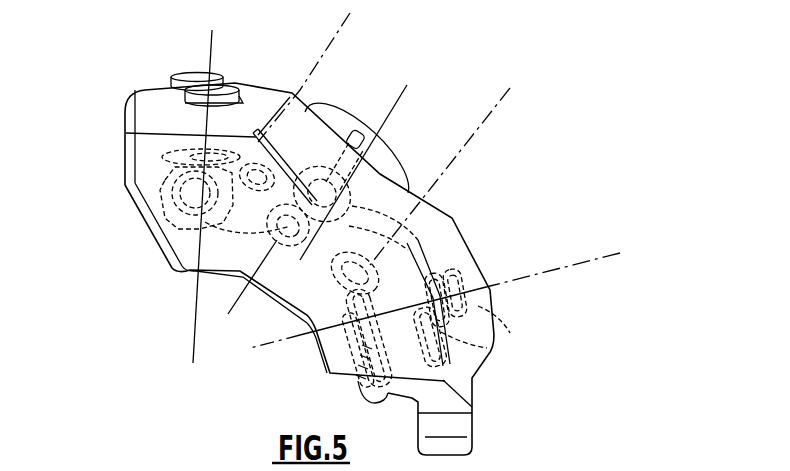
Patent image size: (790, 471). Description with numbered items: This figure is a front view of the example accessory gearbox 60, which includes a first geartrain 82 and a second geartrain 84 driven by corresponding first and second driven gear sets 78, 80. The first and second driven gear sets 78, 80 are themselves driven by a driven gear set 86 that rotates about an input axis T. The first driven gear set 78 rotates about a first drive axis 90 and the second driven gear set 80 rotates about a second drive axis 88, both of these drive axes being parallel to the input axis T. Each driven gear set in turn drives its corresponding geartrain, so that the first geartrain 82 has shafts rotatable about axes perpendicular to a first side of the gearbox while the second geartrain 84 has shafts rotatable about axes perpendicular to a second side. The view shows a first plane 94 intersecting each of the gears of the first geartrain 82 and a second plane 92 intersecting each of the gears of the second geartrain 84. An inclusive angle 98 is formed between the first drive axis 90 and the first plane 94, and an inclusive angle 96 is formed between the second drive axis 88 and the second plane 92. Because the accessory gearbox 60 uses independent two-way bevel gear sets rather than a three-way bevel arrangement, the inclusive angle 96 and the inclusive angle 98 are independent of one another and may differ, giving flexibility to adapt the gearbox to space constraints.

The accessory gearbox 60 is at (606, 103).
The first driven gear set 78 is at (246, 203).
The second driven gear set 80 is at (345, 322).
The first geartrain 82 is at (138, 78).
The second geartrain 84 is at (485, 312).
The driven gear set 86 is at (362, 180).
The second drive axis 88 is at (498, 103).
The first drive axis 90 is at (352, 20).
The second plane 92 is at (572, 258).
The first plane 94 is at (209, 43).
The inclusive angle 96 is at (466, 155).
The inclusive angle 98 is at (300, 72).
The input axis T is at (407, 88).